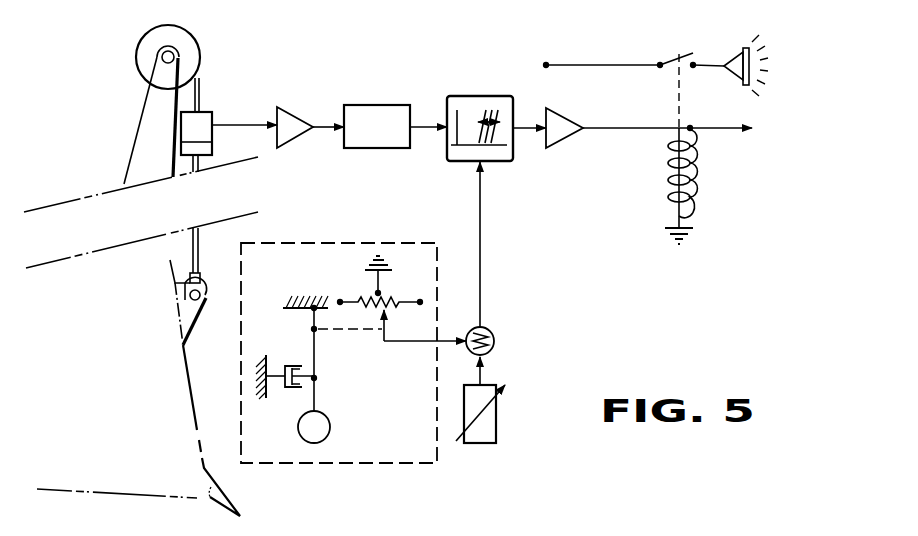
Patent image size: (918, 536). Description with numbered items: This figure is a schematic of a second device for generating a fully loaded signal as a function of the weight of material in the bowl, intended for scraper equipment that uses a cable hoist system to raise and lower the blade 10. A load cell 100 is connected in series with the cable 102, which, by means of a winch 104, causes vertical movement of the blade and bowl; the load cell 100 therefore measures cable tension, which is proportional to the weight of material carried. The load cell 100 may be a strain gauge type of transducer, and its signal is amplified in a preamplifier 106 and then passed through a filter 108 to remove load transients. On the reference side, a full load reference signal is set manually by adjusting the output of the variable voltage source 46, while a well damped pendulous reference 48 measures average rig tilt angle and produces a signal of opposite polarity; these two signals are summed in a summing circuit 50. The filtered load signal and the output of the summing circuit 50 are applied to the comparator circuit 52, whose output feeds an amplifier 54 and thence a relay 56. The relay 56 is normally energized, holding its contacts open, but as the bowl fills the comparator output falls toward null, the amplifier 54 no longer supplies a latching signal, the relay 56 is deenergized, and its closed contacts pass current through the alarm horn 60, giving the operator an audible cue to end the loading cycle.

The blade 10 is at (211, 493).
The variable voltage source 46 is at (497, 425).
The pendulous reference 48 is at (418, 465).
The summing circuit 50 is at (494, 333).
The comparator circuit 52 is at (503, 163).
The amplifier 54 is at (560, 145).
The relay 56 is at (692, 185).
The alarm horn 60 is at (742, 50).
The load cell 100 is at (212, 133).
The cable 102 is at (200, 237).
The winch 104 is at (198, 37).
The preamplifier 106 is at (289, 146).
The filter 108 is at (364, 150).